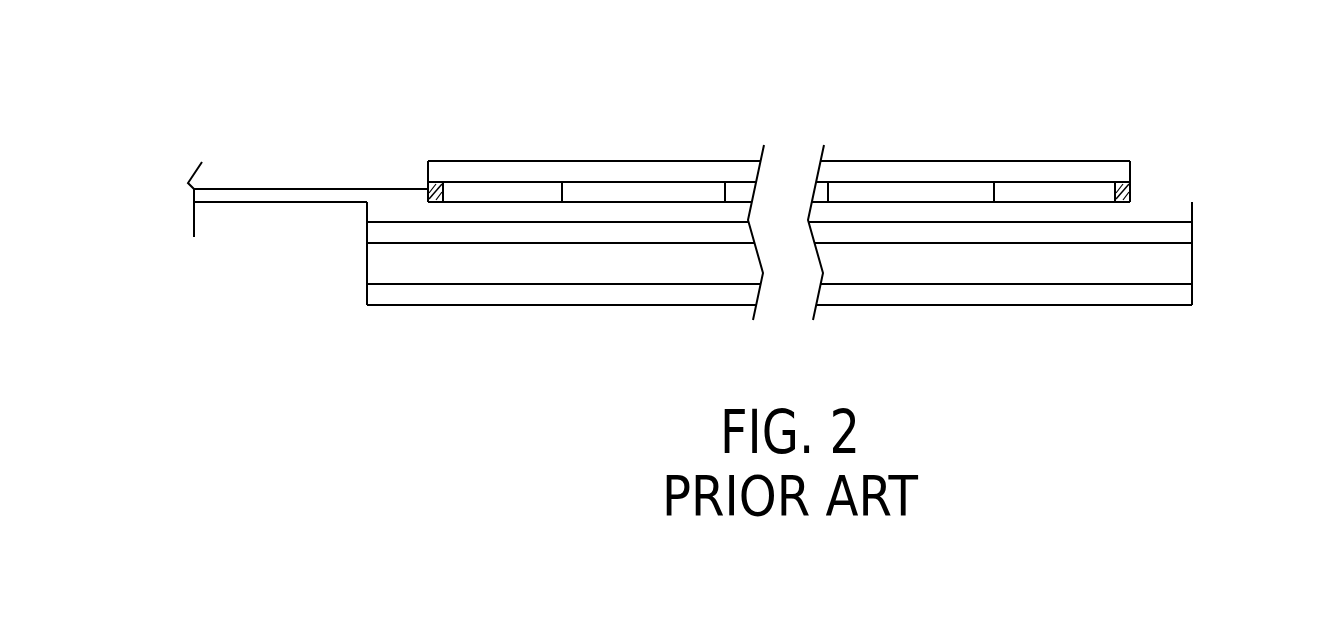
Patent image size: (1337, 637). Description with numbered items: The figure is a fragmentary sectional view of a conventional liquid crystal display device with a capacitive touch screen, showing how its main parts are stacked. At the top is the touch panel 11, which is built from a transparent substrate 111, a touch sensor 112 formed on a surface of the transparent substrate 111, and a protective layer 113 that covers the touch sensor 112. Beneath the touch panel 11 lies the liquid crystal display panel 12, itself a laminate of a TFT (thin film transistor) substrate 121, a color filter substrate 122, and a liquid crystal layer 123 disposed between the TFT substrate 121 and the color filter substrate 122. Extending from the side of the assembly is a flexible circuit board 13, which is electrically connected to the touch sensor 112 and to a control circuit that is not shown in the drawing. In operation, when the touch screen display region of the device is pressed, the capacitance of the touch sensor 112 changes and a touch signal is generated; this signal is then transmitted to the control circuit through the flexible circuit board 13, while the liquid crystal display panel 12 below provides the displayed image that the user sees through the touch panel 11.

The touch panel 11 is at (771, 111).
The transparent substrate 111 is at (1187, 211).
The touch sensor 112 is at (644, 188).
The protective layer 113 is at (977, 172).
The liquid crystal display panel 12 is at (789, 266).
The TFT substrate 121 is at (1129, 297).
The color filter substrate 122 is at (1186, 236).
The liquid crystal layer 123 is at (418, 261).
The flexible circuit board 13 is at (305, 188).